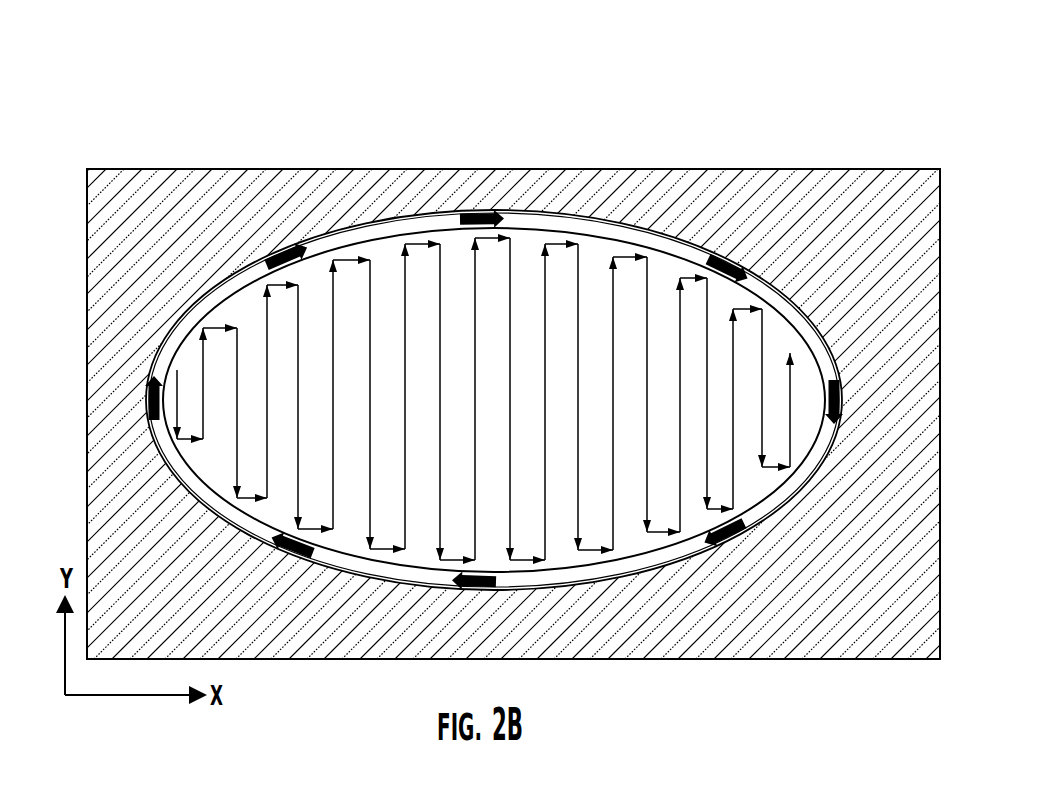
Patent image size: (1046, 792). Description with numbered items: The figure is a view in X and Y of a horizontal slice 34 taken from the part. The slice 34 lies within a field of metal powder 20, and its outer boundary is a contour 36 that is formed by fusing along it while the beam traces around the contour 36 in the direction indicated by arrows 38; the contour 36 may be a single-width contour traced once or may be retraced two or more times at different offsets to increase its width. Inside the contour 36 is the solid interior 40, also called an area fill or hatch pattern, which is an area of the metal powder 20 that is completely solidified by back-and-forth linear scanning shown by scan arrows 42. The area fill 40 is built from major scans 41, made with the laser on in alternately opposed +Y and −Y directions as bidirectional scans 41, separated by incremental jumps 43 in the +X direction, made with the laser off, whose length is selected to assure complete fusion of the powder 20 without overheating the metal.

The metal powder 20 is at (167, 243).
The slice 34 is at (672, 212).
The contour 36 is at (397, 232).
The arrows 38 is at (488, 212).
The solid interior 40 is at (501, 322).
The major scans 41 is at (267, 318).
The scan arrows 42 is at (683, 318).
The incremental jumps 43 is at (274, 277).